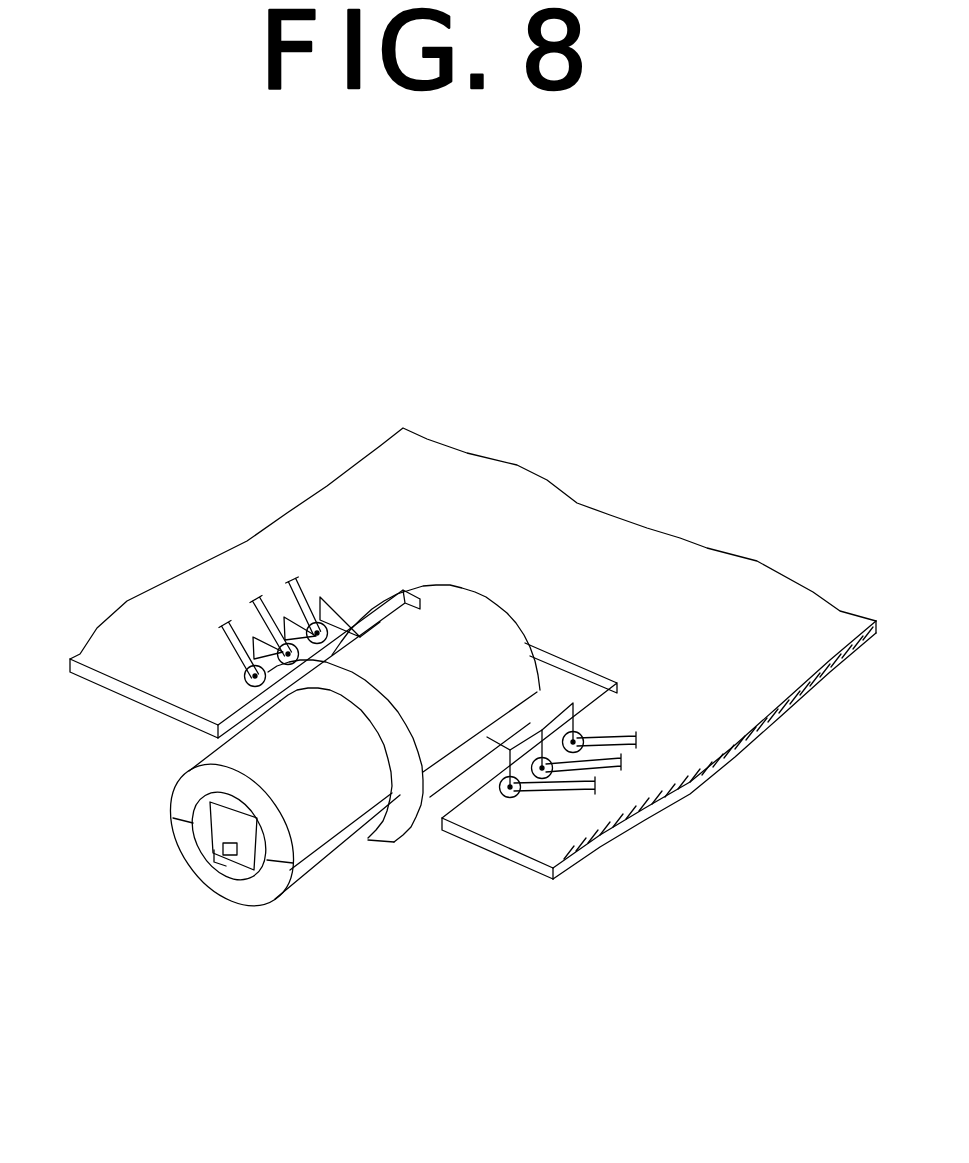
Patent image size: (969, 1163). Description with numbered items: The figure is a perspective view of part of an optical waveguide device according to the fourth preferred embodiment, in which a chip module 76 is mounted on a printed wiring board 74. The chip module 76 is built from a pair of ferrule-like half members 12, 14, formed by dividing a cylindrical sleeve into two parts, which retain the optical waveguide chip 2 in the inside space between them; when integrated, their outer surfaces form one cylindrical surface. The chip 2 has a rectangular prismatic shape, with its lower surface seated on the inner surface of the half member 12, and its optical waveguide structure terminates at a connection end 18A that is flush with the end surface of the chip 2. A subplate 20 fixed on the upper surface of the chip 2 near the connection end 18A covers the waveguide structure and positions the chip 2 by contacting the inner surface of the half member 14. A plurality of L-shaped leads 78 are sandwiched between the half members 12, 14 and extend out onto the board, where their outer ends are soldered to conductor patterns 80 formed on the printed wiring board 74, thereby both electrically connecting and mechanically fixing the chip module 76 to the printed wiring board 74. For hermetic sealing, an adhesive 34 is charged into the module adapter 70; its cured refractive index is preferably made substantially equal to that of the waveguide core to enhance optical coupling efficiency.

The optical waveguide chip 2 is at (224, 848).
The half member 12 is at (300, 887).
The half member 14 is at (330, 810).
The connection end 18A is at (227, 858).
The subplate 20 is at (213, 820).
The adhesive 34 is at (205, 795).
The module adapter 70 is at (462, 928).
The printed wiring board 74 is at (683, 567).
The chip module 76 is at (245, 932).
The L-shaped leads 78 is at (333, 632).
The conductor patterns 80 is at (250, 606).